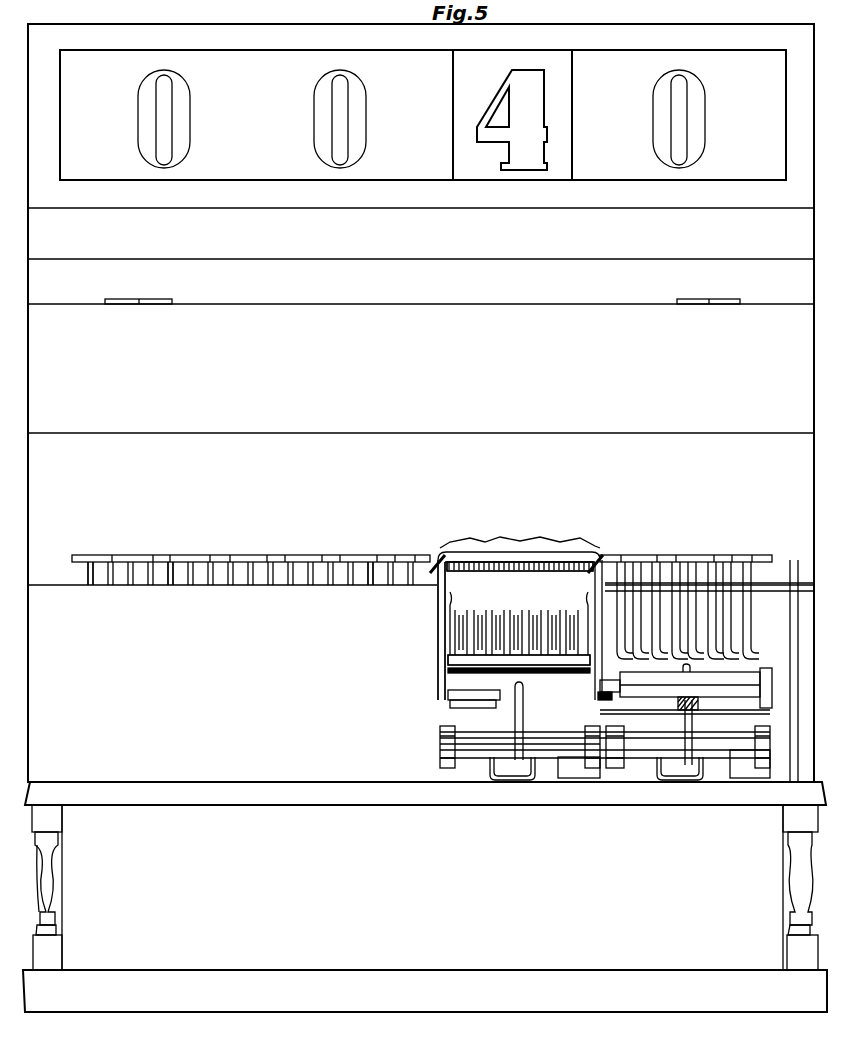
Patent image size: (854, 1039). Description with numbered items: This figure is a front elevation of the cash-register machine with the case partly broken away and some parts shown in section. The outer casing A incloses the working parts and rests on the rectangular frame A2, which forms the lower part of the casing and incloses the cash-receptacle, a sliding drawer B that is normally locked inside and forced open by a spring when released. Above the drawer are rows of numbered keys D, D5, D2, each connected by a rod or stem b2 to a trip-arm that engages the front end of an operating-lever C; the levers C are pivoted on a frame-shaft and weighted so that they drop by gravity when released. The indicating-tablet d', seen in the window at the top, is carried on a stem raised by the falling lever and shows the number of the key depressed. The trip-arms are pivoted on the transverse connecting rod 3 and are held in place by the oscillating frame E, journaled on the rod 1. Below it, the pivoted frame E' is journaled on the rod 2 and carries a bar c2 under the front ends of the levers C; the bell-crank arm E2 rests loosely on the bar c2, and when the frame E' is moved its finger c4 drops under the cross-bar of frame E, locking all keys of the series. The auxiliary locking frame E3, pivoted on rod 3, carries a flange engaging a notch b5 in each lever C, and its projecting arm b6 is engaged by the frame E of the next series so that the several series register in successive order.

The outer casing A is at (417, 403).
The rectangular frame A2 is at (425, 842).
The sliding drawer B is at (425, 908).
The operating-lever C is at (537, 625).
The key D is at (747, 556).
The key D5 is at (190, 563).
The key D2 is at (362, 560).
The indicating-tablet d' is at (506, 120).
The rod or stem b2 is at (752, 573).
The notch or shoulder b5 is at (520, 577).
The projecting arm b6 is at (600, 695).
The oscillating frame E is at (686, 699).
The pivoted frame E' is at (629, 746).
The bell-crank arm E2 is at (688, 768).
The auxiliary locking bar or frame E3 is at (445, 640).
The bar c2 is at (645, 738).
The finger or arm c4 is at (692, 728).
The transverse connecting rod or shaft 1 is at (465, 696).
The transverse connecting rod or shaft 2 is at (475, 748).
The transverse connecting rod or shaft 3 is at (455, 666).